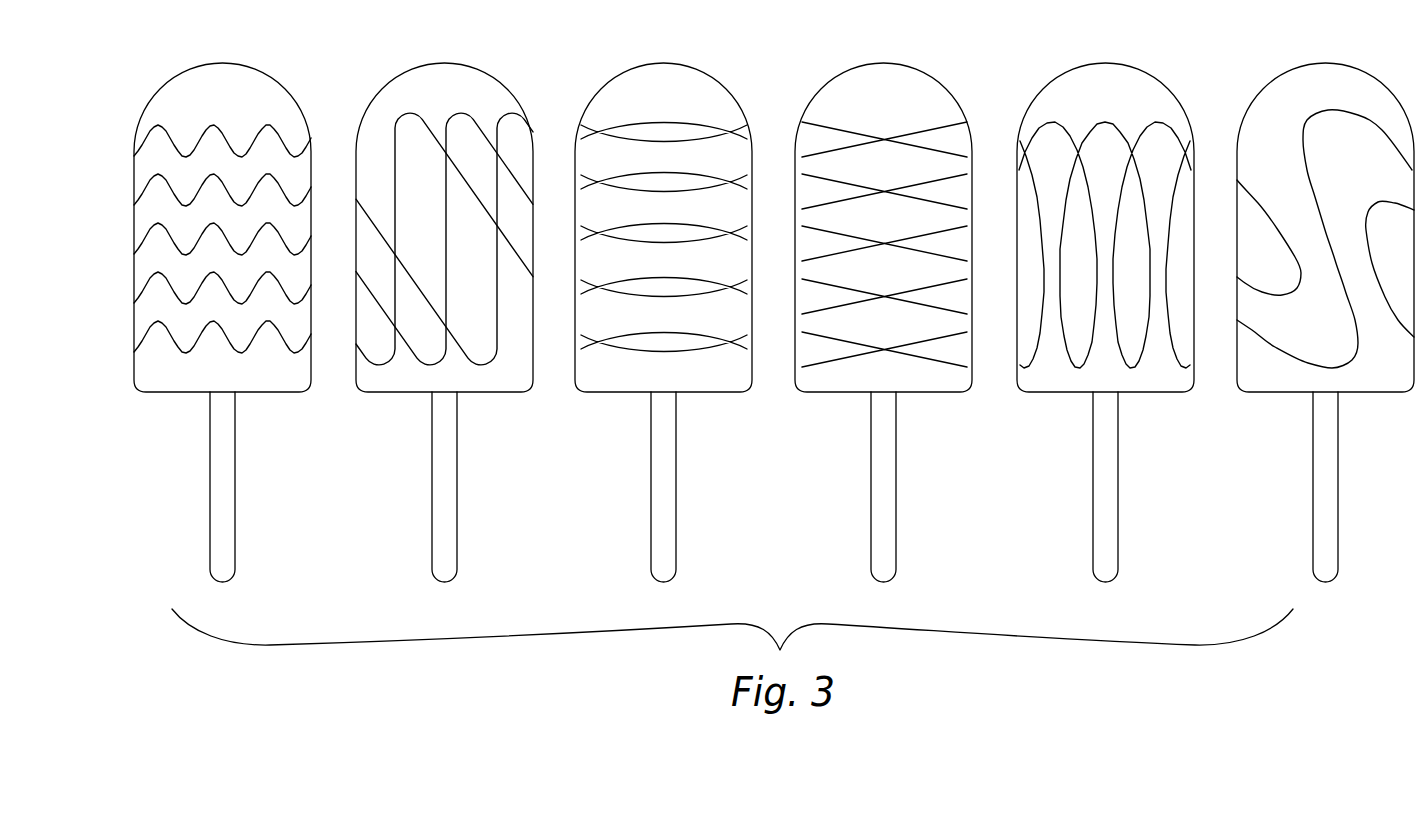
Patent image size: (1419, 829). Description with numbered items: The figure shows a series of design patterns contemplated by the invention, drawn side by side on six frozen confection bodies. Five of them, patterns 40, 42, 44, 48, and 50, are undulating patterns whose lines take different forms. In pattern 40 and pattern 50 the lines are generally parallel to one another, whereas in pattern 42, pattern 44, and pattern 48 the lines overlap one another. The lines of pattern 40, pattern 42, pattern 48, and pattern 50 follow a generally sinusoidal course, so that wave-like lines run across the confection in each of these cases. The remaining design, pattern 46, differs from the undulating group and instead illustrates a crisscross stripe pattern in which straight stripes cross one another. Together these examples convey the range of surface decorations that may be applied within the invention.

The pattern 40 is at (272, 118).
The pattern 42 is at (508, 108).
The pattern 44 is at (725, 127).
The pattern 46 is at (933, 123).
The pattern 48 is at (1162, 118).
The pattern 50 is at (1342, 108).